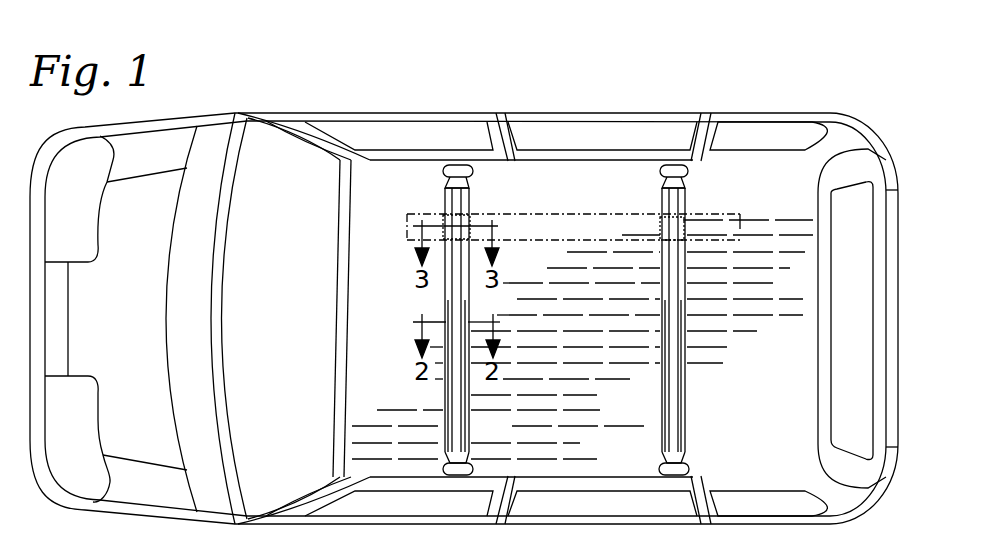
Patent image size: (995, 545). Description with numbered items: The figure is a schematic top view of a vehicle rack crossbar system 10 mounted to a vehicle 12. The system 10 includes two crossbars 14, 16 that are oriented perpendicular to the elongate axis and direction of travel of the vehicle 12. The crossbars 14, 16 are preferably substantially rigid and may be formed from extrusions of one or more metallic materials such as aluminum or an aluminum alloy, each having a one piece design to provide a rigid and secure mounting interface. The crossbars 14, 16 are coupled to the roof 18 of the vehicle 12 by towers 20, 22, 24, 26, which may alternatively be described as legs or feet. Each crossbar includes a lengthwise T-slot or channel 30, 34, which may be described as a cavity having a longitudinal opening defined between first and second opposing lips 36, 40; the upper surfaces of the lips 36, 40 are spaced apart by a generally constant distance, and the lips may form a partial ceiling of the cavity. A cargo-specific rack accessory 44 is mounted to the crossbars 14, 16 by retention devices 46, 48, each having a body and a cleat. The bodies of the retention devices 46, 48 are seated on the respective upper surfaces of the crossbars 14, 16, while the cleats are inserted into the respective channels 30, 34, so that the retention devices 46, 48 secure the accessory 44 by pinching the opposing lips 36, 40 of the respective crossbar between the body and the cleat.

The vehicle rack crossbar system 10 is at (530, 279).
The vehicle 12 is at (232, 112).
The crossbar 14 is at (555, 322).
The crossbar 16 is at (669, 322).
The roof 18 is at (778, 385).
The tower 20 is at (447, 170).
The tower 22 is at (472, 462).
The tower 24 is at (663, 170).
The tower 26 is at (688, 462).
The channel 30 is at (463, 413).
The channel 34 is at (681, 410).
The first lip 36 is at (447, 433).
The second lip 40 is at (463, 432).
The cargo-specific rack accessory 44 is at (528, 214).
The retention device 46 is at (446, 220).
The retention device 48 is at (664, 220).